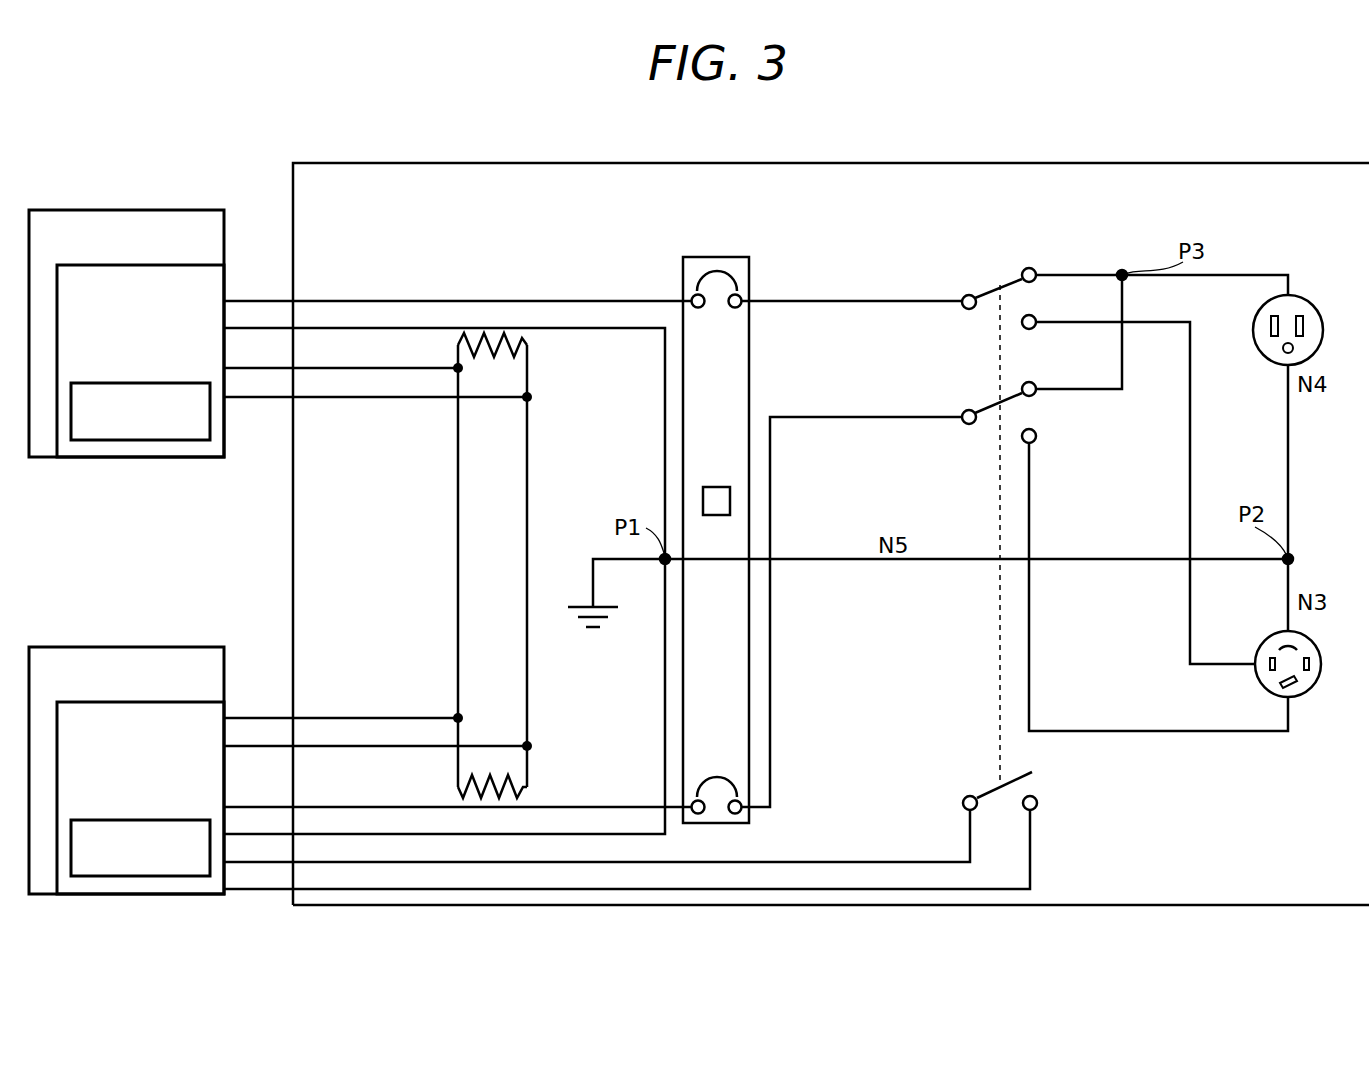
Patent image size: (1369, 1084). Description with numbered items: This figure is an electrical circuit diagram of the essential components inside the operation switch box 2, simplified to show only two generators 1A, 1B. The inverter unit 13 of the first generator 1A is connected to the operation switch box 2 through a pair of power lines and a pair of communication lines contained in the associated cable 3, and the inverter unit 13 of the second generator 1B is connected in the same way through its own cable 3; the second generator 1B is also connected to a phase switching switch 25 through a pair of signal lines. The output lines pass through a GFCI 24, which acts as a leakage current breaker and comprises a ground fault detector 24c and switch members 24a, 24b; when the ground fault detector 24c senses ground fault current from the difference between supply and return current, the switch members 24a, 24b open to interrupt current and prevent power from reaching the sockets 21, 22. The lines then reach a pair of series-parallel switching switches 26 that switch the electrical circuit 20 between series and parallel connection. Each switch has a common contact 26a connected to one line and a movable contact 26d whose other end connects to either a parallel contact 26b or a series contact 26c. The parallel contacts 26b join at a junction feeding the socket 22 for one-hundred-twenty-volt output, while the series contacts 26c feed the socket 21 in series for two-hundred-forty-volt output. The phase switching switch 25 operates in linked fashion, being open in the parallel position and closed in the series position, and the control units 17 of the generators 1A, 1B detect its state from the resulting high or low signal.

The first generator 1A is at (53, 210).
The second generator 1B is at (53, 647).
The operation switch box 2 is at (1333, 162).
The cable 3 is at (250, 255).
The inverter unit 13 is at (57, 432).
The control unit 17 is at (164, 441).
The electrical circuit 20 is at (1238, 178).
The socket 21 is at (1322, 670).
The socket 22 is at (1308, 303).
The GFCI 24 is at (678, 513).
The switch member 24a is at (716, 273).
The switch member 24b is at (715, 783).
The ground fault detector 24c is at (702, 500).
The phase switching switch 25 is at (978, 792).
The series-parallel switching switch 26 is at (1100, 455).
The common contact 26a is at (968, 295).
The parallel contact 26b is at (1029, 268).
The series contact 26c is at (1036, 324).
The movable contact 26d is at (981, 290).